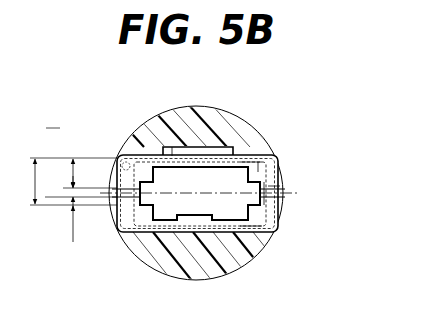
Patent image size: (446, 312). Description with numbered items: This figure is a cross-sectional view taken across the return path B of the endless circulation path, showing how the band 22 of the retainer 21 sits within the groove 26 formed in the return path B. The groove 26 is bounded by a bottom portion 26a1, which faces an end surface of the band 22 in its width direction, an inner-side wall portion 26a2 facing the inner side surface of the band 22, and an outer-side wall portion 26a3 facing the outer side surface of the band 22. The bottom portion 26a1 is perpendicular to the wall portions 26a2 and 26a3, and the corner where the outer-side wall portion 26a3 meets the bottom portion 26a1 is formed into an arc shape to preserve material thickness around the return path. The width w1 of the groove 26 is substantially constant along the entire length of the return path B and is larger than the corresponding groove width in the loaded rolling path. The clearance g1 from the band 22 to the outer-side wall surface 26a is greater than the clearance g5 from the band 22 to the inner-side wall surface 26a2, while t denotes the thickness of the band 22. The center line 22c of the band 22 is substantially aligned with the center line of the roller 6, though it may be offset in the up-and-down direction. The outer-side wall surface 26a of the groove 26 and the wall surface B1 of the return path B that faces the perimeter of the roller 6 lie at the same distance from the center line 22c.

The groove 26 is at (123, 163).
The outer-side wall surface 26a is at (168, 162).
The bottom portion 26a1 is at (284, 196).
The inner-side wall portion 26a2 is at (262, 212).
The outer-side wall portion 26a3 is at (255, 163).
The retainer 21 is at (232, 154).
The band 22 is at (142, 220).
The center line 22c is at (278, 188).
The roller 6 is at (262, 166).
The return path B is at (192, 222).
The wall surface B1 is at (172, 147).
The clearance g1 is at (72, 160).
The clearance g5 is at (72, 213).
The width w1 is at (24, 181).
The thickness t is at (70, 193).